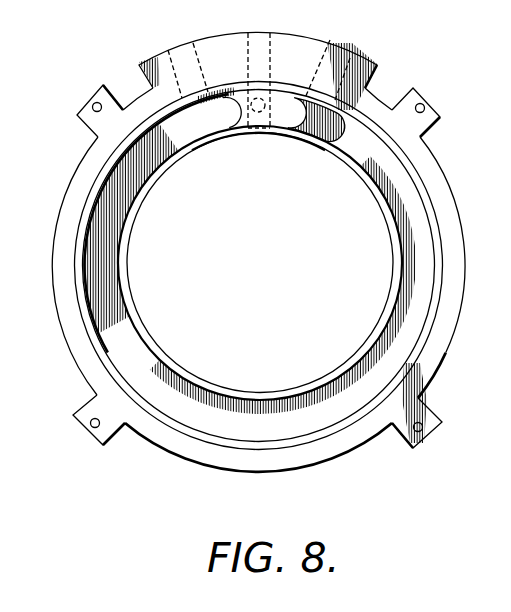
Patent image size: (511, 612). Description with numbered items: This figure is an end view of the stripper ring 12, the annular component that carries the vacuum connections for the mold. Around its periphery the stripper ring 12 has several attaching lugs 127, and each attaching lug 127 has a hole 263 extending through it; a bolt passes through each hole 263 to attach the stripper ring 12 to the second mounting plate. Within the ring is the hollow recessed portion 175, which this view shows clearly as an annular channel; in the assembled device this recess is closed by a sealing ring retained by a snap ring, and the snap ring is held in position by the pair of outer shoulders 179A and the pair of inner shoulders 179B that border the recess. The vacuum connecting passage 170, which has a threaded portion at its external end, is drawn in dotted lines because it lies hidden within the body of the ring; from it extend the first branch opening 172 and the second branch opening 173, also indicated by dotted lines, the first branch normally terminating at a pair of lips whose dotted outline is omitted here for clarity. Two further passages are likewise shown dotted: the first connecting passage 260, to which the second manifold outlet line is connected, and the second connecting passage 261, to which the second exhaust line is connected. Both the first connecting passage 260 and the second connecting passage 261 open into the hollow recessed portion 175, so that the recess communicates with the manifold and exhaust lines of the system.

The stripper ring 12 is at (484, 171).
The attaching lug 127 is at (100, 86).
The hole 263 is at (92, 107).
The inner shoulder 179B is at (423, 157).
The outer shoulder 179A is at (399, 270).
The hollow recessed portion 175 is at (393, 368).
The first connecting passage 260 is at (328, 62).
The second connecting passage 261 is at (173, 62).
The vacuum connecting passage 170 is at (248, 50).
The first branch opening 172 is at (264, 98).
The second branch opening 173 is at (262, 130).